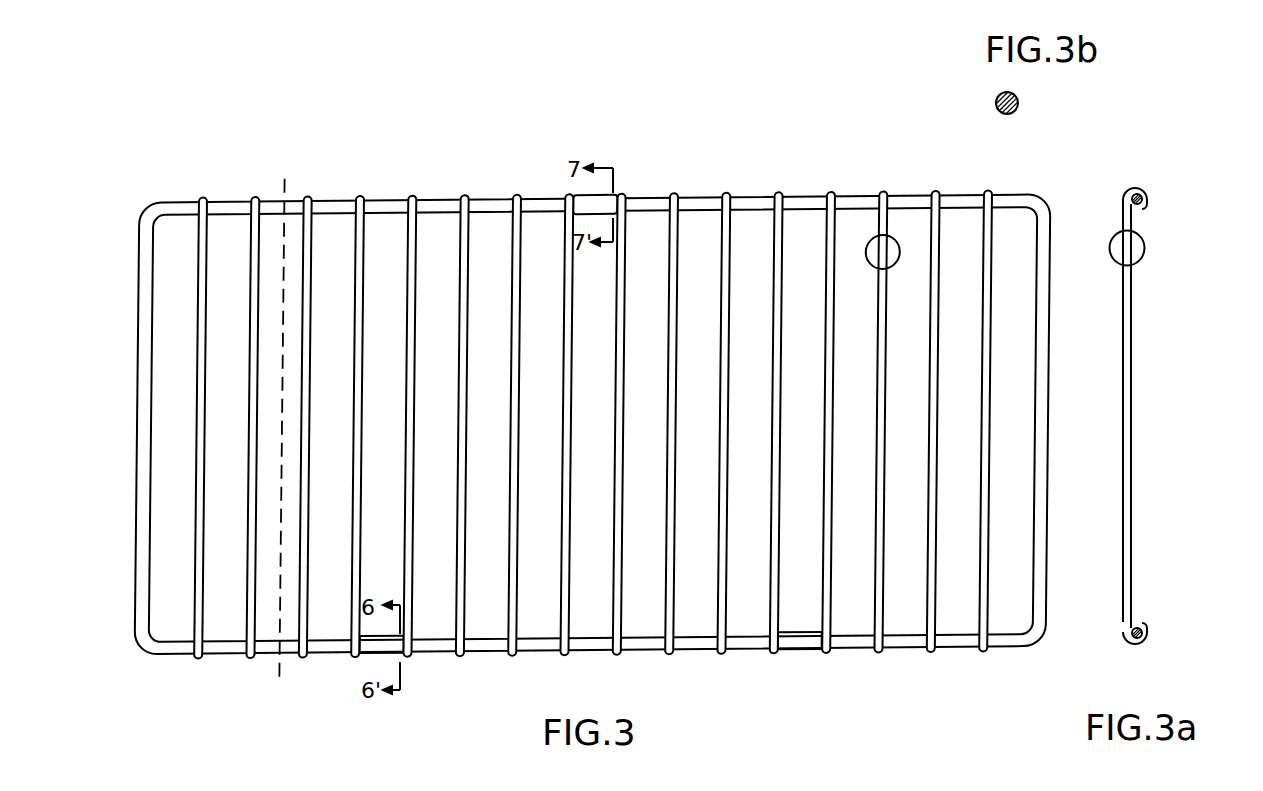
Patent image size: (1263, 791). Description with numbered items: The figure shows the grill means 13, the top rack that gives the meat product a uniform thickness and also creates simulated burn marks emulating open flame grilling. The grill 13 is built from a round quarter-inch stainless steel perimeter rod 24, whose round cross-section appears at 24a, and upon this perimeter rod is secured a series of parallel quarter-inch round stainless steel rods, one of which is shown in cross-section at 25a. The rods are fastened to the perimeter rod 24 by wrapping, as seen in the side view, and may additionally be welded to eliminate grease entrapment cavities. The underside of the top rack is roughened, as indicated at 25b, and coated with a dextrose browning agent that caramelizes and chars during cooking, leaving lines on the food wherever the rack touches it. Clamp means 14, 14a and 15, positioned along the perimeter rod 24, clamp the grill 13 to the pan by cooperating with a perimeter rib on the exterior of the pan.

In FIG. 3, the grill means 13 is at (710, 441).
In FIG. 3, the perimeter rod 24 is at (137, 432).
In FIG. 3, the clamp means 14 is at (363, 657).
In FIG. 3, the clamp means 14a is at (798, 652).
In FIG. 3, the clamp means 15 is at (585, 192).
In FIG. 3a, the round cross-section of perimeter rod 24a is at (1143, 207).
In FIG. 3b, the cross-section of stainless steel rod 25a is at (1036, 104).
In FIG. 3a, the roughened underside of top rack 25b is at (1131, 420).